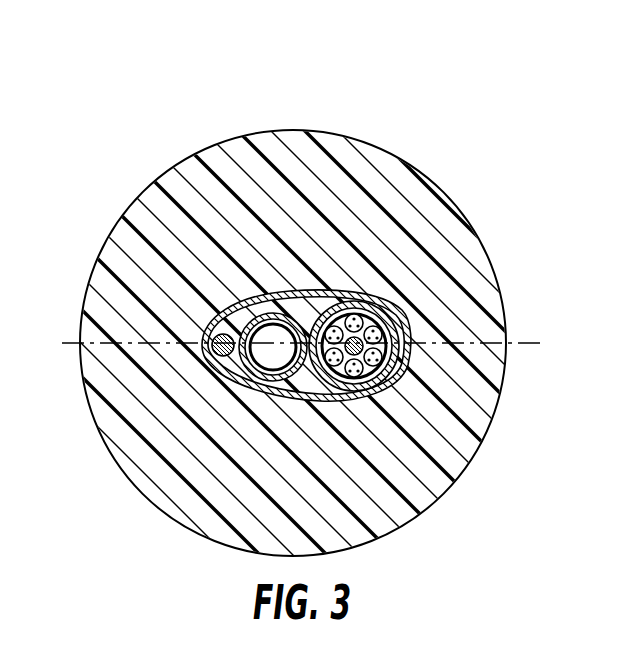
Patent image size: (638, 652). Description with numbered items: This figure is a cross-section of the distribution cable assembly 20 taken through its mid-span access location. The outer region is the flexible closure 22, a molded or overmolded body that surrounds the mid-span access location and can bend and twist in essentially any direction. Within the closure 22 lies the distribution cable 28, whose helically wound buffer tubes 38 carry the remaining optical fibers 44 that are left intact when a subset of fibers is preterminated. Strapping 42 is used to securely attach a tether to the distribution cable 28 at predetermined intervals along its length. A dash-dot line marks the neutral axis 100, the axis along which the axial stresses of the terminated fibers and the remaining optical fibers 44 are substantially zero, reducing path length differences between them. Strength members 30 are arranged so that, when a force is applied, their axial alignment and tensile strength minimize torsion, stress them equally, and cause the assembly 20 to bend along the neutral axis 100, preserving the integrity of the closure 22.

The distribution cable assembly 20 is at (319, 326).
The flexible closure 22 is at (187, 200).
The distribution cable 28 is at (303, 302).
The strength members 30 is at (303, 361).
The buffer tubes 38 is at (258, 318).
The strapping 42 is at (272, 370).
The remaining optical fibers 44 is at (353, 317).
The neutral axis 100 is at (72, 343).